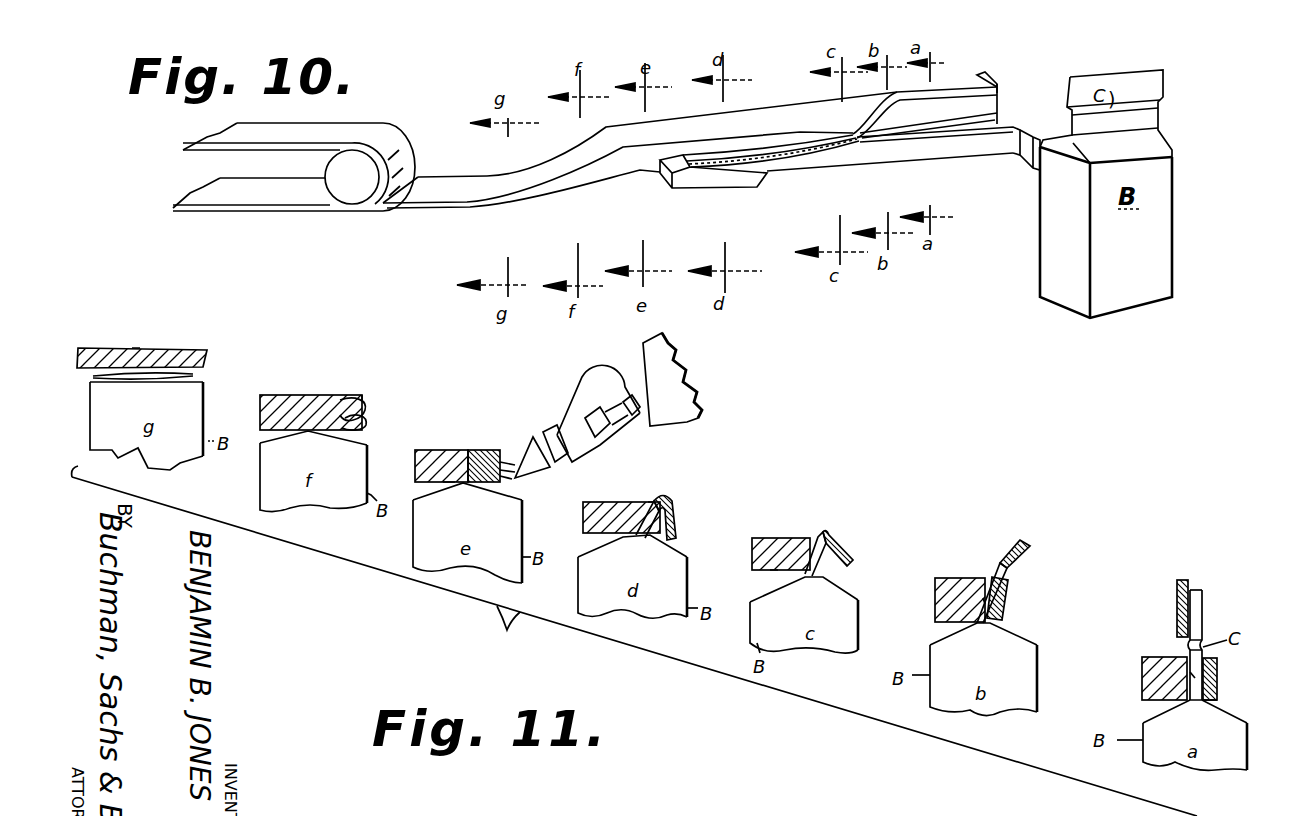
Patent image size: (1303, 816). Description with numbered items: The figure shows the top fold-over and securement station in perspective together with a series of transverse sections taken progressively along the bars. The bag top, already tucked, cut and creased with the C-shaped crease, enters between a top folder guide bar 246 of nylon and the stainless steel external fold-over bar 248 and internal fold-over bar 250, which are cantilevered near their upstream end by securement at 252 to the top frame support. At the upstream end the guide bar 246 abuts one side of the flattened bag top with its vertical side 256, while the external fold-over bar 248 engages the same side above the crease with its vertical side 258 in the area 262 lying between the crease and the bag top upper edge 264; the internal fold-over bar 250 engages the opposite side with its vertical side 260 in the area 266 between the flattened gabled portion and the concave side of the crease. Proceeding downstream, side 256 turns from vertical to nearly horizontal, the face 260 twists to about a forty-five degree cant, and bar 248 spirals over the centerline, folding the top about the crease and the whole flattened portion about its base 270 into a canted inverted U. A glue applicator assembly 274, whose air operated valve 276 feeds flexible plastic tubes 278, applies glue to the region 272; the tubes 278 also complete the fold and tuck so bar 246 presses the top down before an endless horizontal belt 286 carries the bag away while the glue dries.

In FIG. 10, the endless horizontal belt 286 is at (290, 211).
In FIG. 10, the top folder guide bar 246 is at (453, 207).
In FIG. 11, the top folder guide bar 246 is at (148, 351).
In FIG. 10, the external fold-over bar 248 is at (955, 88).
In FIG. 11, the external fold-over bar 248 is at (678, 523).
In FIG. 10, the internal fold-over bar 250 is at (962, 157).
In FIG. 11, the internal fold-over bar 250 is at (670, 505).
In FIG. 10, the securement to top frame support 252 is at (997, 80).
In FIG. 11, the vertical side of guide bar 256 is at (132, 348).
In FIG. 11, the base of bag top flattened portion 270 is at (308, 432).
In FIG. 11, the glue region 272 is at (365, 425).
In FIG. 11, the glue applicator assembly 274 is at (580, 384).
In FIG. 11, the air operated valve 276 is at (573, 458).
In FIG. 11, the flexible plastic glue applicator tubes 278 is at (512, 458).
In FIG. 11, the vertical side of external fold-over bar 258 is at (1195, 590).
In FIG. 11, the bag top area between crease and upper edge 262 is at (1195, 613).
In FIG. 11, the bag top upper edge 264 is at (1203, 587).
In FIG. 11, the vertical side of internal fold-over bar 260 is at (1203, 663).
In FIG. 11, the bag top area between gabled portion and crease 266 is at (1217, 692).